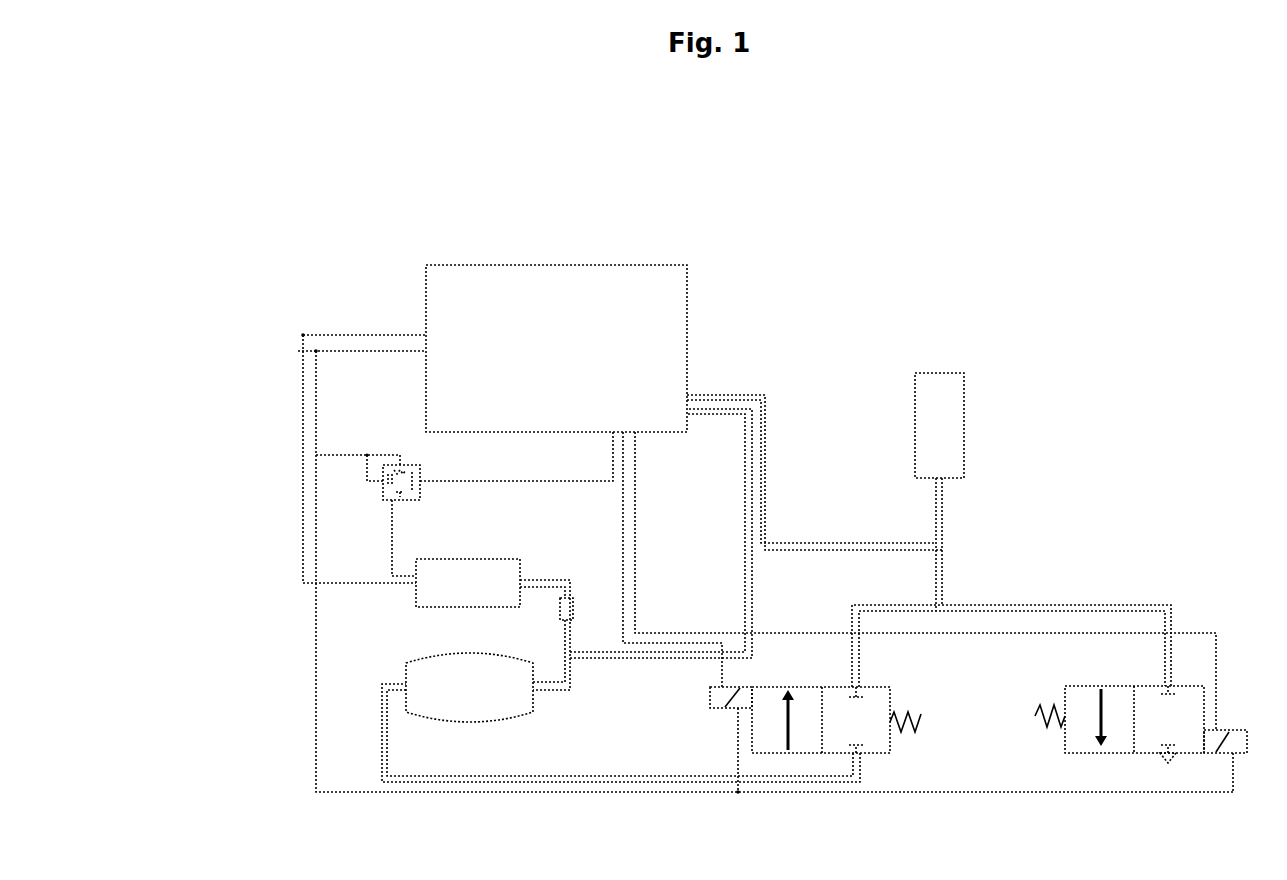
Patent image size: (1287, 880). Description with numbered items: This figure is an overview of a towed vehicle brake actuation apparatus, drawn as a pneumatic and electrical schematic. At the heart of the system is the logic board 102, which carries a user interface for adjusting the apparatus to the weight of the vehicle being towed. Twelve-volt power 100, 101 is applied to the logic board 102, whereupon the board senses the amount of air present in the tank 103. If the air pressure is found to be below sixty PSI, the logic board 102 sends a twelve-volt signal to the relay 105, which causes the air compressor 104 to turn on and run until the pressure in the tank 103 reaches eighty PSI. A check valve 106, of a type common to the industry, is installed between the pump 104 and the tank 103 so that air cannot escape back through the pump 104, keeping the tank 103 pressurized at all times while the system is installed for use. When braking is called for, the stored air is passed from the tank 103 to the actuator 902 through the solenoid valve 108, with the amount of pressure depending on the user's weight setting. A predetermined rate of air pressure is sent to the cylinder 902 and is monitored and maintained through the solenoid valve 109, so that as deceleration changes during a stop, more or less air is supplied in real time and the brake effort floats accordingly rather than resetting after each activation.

The 12 v power 100 is at (302, 334).
The 12 v power 101 is at (298, 351).
The logic board 102 is at (423, 264).
The tank 103 is at (406, 661).
The air compressor 104 is at (521, 558).
The relay 105 is at (422, 468).
The check valve 106 is at (577, 603).
The solenoid valve 108 is at (896, 689).
The solenoid valve 109 is at (1061, 689).
The actuator 902 is at (972, 386).